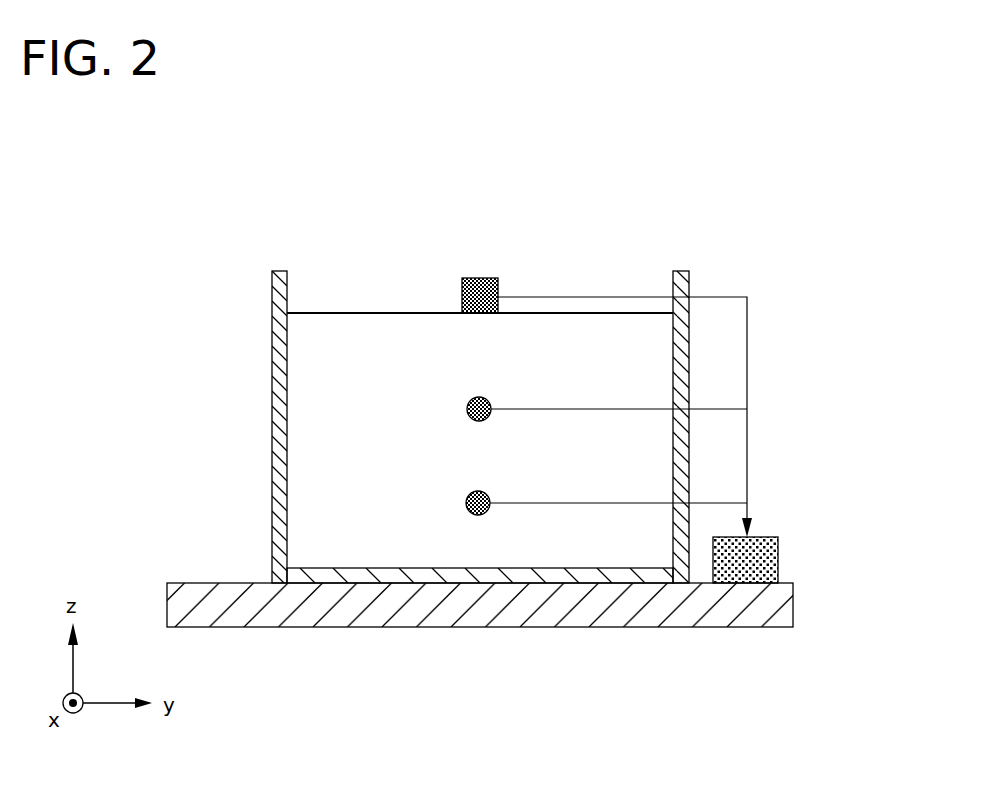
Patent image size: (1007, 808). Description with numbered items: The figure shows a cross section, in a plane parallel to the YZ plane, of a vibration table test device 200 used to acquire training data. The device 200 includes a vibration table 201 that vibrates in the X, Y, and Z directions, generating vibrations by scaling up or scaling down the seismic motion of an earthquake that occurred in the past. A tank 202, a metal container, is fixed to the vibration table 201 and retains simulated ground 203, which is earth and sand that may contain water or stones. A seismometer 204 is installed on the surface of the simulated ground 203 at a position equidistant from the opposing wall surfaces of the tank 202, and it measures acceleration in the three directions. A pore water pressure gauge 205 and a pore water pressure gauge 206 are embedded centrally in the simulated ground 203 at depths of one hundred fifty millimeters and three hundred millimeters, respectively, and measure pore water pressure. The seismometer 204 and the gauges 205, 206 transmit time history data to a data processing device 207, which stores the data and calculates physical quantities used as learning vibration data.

The vibration table test device 200 is at (766, 206).
The vibration table 201 is at (773, 608).
The tank 202 is at (280, 341).
The simulated ground 203 is at (372, 337).
The seismometer 204 is at (480, 278).
The pore water pressure gauge 205 is at (467, 411).
The pore water pressure gauge 206 is at (466, 504).
The data processing device 207 is at (778, 566).